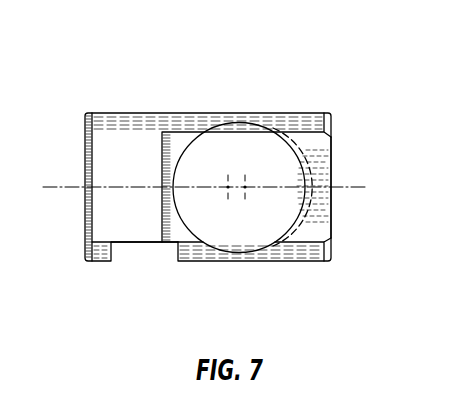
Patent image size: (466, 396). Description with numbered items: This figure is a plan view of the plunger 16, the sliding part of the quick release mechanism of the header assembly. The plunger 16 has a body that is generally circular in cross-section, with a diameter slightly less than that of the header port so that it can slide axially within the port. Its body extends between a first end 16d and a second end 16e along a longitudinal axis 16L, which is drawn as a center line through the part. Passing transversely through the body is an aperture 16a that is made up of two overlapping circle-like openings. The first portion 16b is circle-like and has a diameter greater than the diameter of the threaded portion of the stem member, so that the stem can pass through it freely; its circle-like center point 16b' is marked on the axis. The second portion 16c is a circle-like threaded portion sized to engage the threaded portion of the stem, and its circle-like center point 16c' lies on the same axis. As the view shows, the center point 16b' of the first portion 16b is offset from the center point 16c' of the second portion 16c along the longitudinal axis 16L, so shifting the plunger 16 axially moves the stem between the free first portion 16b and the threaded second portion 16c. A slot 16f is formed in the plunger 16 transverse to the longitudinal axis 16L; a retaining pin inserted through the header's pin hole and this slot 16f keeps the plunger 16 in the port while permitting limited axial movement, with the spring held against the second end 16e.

The plunger 16 is at (204, 141).
The aperture 16a is at (246, 161).
The first portion 16b is at (239, 213).
The center point 16b' is at (173, 140).
The second circle-like threaded portion 16c is at (288, 154).
The center point 16c' is at (299, 239).
The first end 16d is at (57, 187).
The second end 16e is at (351, 182).
The slot 16f is at (144, 272).
The longitudinal axis 16L is at (178, 187).